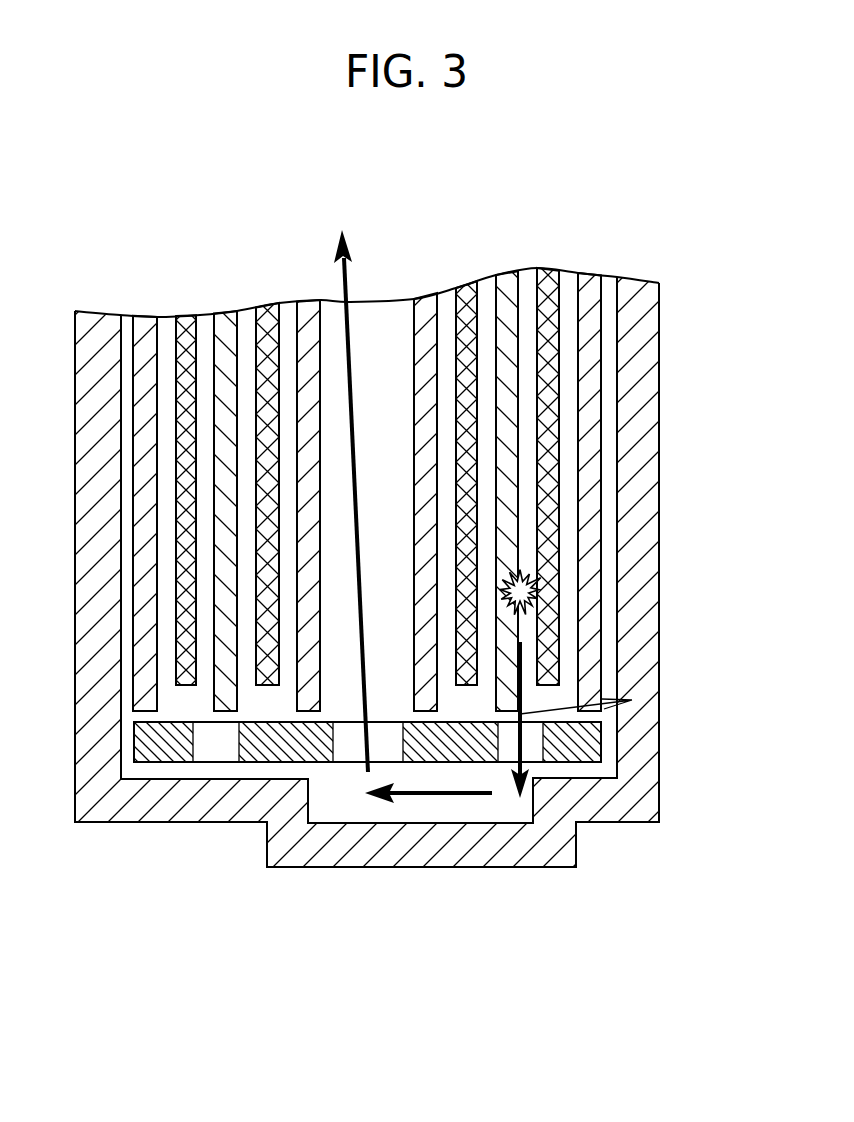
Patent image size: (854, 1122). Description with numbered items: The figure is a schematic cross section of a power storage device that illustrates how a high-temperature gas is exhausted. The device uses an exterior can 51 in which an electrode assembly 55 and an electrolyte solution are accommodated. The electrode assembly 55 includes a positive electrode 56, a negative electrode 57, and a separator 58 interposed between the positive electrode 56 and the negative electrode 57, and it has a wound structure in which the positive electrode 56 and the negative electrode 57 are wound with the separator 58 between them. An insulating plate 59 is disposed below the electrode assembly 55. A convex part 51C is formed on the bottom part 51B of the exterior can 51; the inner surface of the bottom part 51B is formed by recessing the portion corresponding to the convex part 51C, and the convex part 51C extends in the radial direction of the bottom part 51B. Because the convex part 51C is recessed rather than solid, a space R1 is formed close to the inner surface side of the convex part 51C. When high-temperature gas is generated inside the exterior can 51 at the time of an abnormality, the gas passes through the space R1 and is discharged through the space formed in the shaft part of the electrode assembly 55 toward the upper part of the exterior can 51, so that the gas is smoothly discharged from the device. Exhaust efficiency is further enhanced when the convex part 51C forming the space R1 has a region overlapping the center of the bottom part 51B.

The exterior can 51 is at (647, 600).
The bottom part 51B is at (627, 824).
The convex part 51C is at (447, 855).
The electrode assembly 55 is at (369, 442).
The positive electrode 56 is at (425, 296).
The negative electrode 57 is at (507, 290).
The separator 58 is at (465, 283).
The insulating plate 59 is at (580, 742).
The space R1 is at (346, 805).